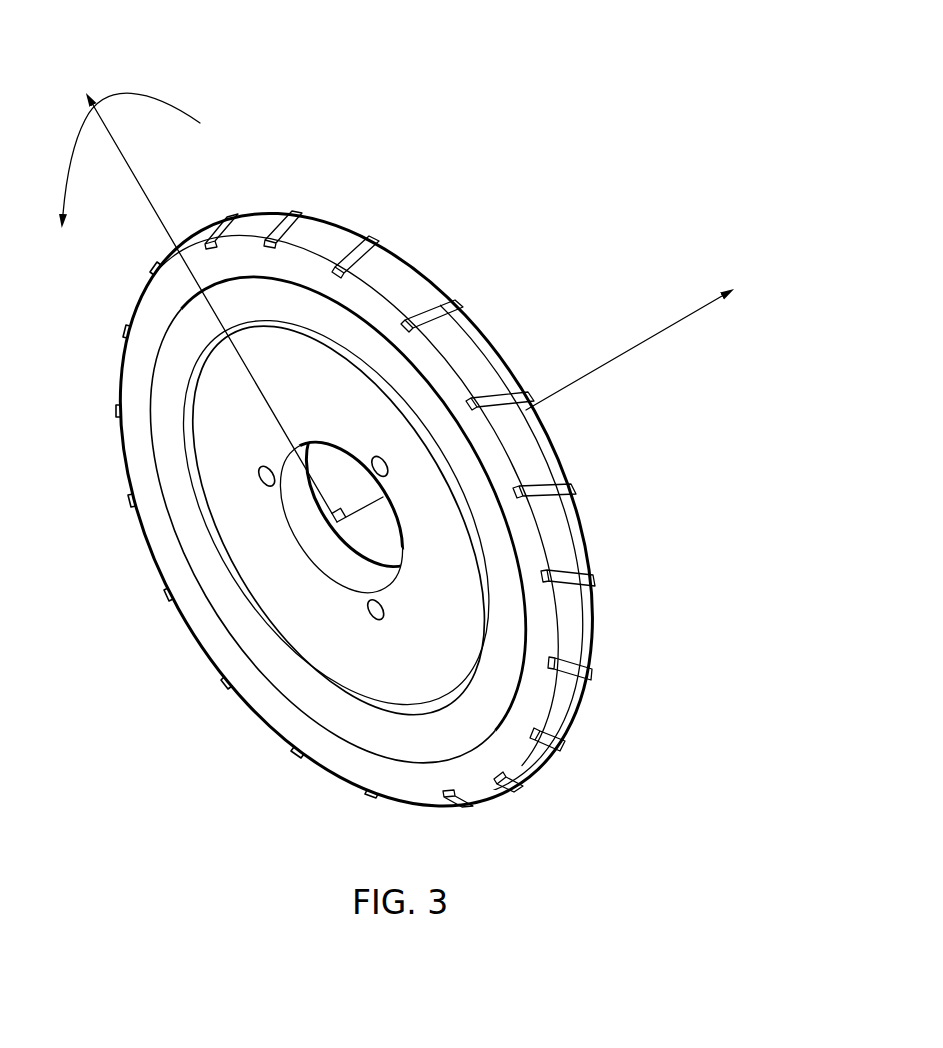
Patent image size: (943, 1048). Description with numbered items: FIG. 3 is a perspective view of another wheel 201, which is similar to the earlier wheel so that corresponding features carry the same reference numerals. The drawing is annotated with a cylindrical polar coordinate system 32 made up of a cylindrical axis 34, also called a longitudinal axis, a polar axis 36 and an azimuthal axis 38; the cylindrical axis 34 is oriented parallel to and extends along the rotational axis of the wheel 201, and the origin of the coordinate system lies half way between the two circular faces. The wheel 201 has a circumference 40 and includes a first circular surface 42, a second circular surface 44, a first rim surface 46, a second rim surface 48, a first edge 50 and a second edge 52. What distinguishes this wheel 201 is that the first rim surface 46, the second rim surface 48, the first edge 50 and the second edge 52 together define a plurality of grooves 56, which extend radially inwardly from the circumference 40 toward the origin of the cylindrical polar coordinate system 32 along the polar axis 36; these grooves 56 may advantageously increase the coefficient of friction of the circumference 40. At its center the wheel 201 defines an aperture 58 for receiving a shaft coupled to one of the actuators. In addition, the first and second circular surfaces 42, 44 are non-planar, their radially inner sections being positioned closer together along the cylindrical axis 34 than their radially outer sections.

The wheel 201 is at (708, 102).
The cylindrical polar coordinate system 32 is at (410, 466).
The cylindrical axis 34 is at (590, 374).
The polar axis 36 is at (147, 192).
The azimuthal axis 38 is at (140, 97).
The circumference 40 is at (207, 674).
The first circular surface 42 is at (367, 734).
The second circular surface 44 is at (343, 519).
The first rim surface 46 is at (390, 287).
The second rim surface 48 is at (468, 333).
The first edge 50 is at (378, 283).
The second edge 52 is at (500, 351).
The plurality of grooves 56 is at (577, 489).
The aperture 58 is at (353, 538).